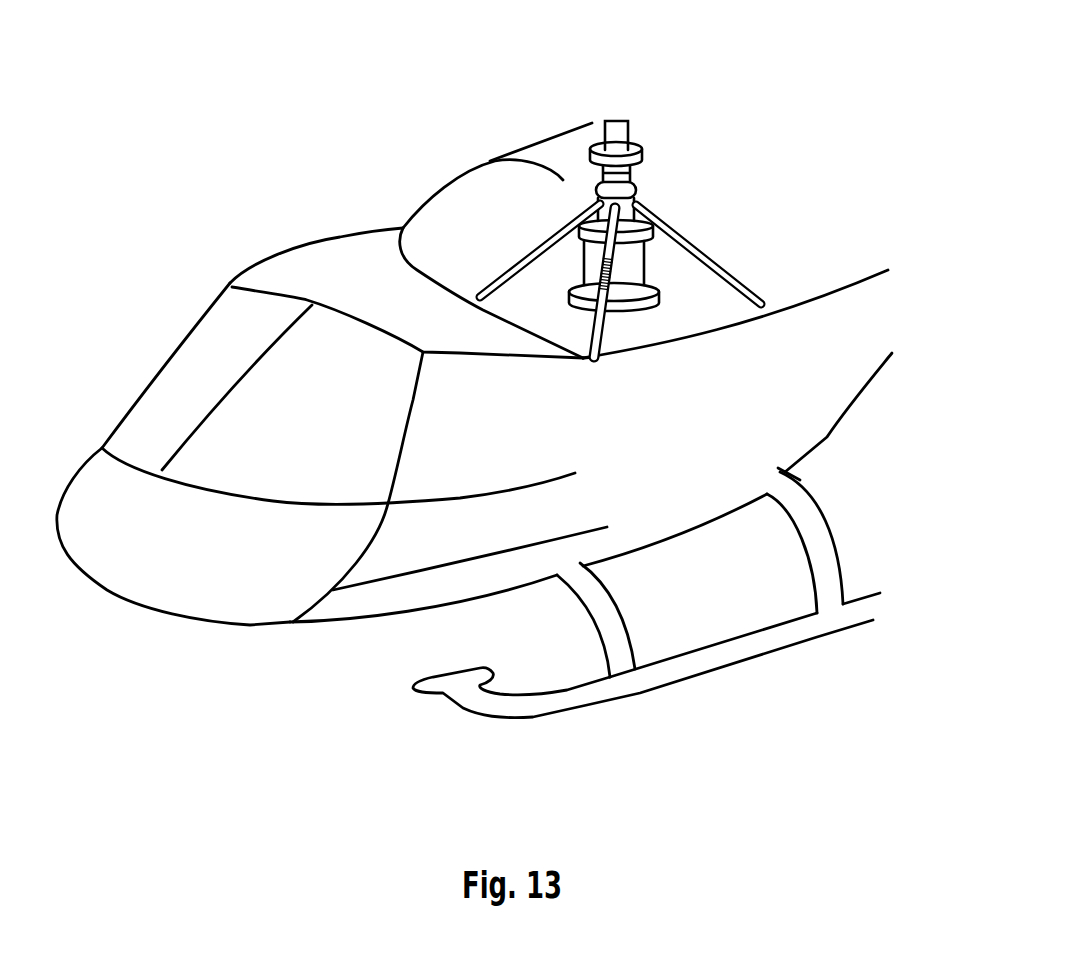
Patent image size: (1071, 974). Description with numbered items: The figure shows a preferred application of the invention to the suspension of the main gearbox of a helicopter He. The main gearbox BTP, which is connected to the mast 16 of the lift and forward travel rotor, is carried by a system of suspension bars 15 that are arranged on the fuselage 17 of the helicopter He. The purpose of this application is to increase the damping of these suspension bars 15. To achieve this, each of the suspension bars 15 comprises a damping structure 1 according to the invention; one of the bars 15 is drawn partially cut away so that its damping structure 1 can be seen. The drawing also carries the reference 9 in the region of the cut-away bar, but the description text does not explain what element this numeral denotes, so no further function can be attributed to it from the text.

The damping structure 1 is at (620, 286).
The threaded rod section of strut 9 is at (593, 282).
The suspension bars 15 is at (662, 240).
The mast 16 is at (623, 133).
The fuselage 17 is at (620, 362).
The main gearbox BTP is at (650, 268).
The helicopter He is at (342, 618).